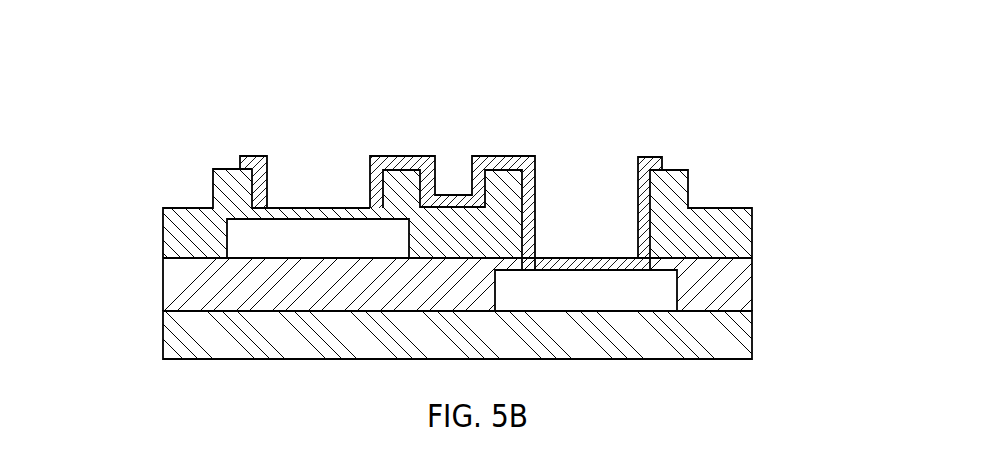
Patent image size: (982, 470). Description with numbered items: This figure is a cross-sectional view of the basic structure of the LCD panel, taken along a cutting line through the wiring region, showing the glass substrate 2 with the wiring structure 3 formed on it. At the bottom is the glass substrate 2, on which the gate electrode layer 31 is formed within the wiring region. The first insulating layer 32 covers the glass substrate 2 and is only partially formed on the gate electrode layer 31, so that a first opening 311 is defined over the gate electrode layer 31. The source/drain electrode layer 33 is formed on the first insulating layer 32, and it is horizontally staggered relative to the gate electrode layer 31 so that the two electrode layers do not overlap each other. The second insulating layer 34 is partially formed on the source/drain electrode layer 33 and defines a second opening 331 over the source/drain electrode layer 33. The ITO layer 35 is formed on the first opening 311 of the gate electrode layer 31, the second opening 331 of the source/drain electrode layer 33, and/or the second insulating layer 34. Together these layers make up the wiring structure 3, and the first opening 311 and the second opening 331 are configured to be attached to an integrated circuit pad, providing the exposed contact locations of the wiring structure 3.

The glass substrate 2 is at (725, 340).
The wiring structure 3 is at (480, 124).
The gate electrode layer 31 is at (642, 282).
The first opening 311 is at (583, 190).
The first insulating layer 32 is at (182, 293).
The source/drain electrode layer 33 is at (255, 248).
The second opening 331 is at (327, 173).
The second insulating layer 34 is at (505, 157).
The ITO layer 35 is at (247, 157).